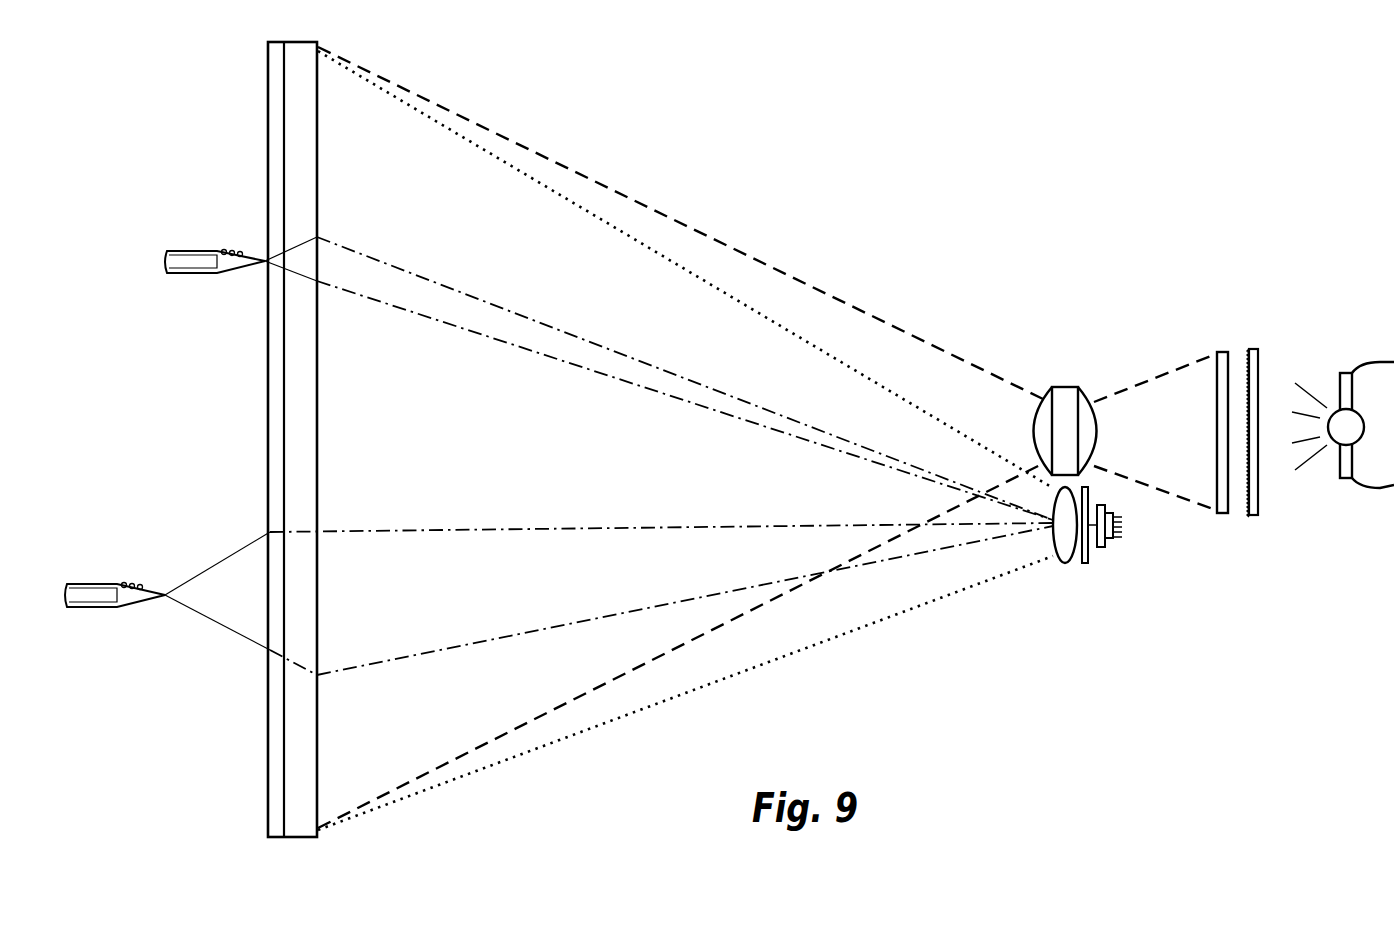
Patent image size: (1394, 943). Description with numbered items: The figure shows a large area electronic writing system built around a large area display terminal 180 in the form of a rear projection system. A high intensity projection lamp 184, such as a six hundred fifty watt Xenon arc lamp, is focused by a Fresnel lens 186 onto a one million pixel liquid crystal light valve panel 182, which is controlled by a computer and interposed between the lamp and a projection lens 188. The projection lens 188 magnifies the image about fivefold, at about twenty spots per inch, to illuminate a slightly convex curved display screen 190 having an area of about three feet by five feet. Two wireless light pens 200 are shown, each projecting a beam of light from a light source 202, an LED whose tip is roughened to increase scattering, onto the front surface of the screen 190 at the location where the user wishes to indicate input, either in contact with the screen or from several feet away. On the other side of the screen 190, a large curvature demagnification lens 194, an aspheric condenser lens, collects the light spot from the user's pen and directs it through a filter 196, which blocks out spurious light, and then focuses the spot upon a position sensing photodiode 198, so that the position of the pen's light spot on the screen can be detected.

The large area display terminal 180 is at (236, 58).
The display screen 190 is at (267, 143).
The wireless light pen 200 is at (184, 250).
The light source 202 is at (100, 582).
The projection lens 188 is at (1065, 385).
The demagnification lens 194 is at (1067, 563).
The filter 196 is at (1087, 563).
The position sensing photodiode 198 is at (1103, 547).
The liquid crystal light valve panel 182 is at (1220, 352).
The Fresnel lens 186 is at (1255, 348).
The projection lamp 184 is at (1343, 373).